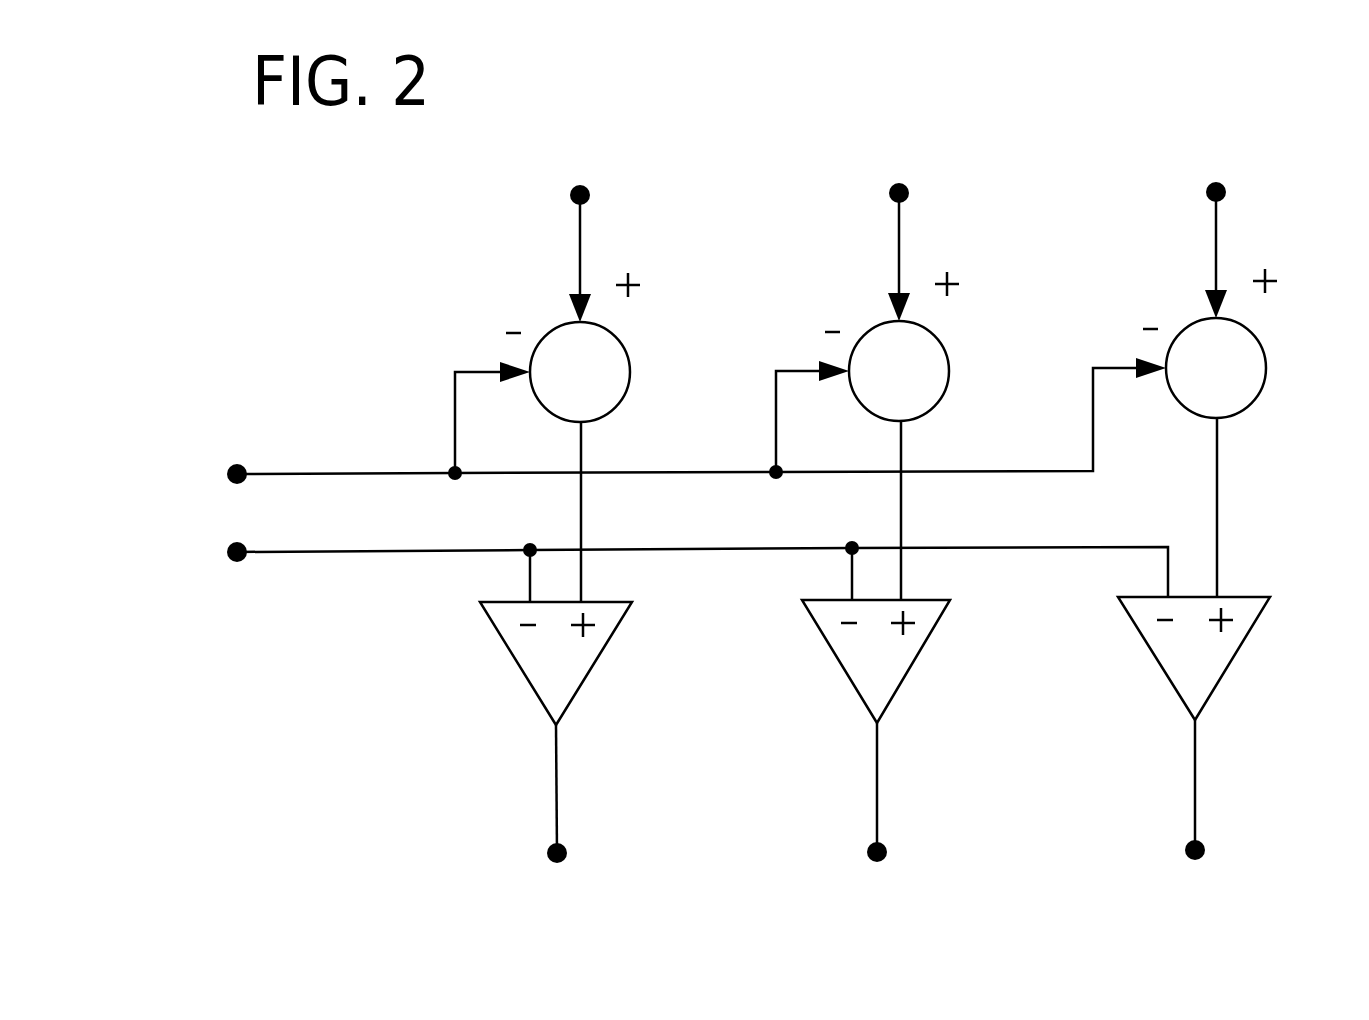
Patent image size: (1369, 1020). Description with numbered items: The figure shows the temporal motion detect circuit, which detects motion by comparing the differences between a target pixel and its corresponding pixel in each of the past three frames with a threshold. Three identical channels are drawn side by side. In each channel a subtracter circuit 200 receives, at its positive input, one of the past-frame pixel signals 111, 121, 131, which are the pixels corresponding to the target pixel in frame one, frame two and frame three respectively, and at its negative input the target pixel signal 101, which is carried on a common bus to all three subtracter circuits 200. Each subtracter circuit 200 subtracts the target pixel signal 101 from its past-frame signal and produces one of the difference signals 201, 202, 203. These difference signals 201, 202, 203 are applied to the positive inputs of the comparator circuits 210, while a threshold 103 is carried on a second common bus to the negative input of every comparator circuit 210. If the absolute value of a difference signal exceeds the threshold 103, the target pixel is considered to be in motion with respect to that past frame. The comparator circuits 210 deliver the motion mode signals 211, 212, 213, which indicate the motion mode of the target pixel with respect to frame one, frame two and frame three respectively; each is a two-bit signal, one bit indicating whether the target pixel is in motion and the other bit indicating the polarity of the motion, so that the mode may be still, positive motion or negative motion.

The target pixel signal 101 is at (639, 426).
The threshold 103 is at (655, 559).
The frame1 pixel signal 111 is at (620, 226).
The frame2 pixel signal 121 is at (939, 225).
The frame3 pixel signal 131 is at (1256, 223).
The subtracter circuit 200 is at (916, 350).
The difference signal 201 is at (625, 512).
The difference signal 202 is at (945, 510).
The difference signal 203 is at (1261, 507).
The comparator circuit 210 is at (893, 661).
The motion mode signal 211 is at (596, 794).
The motion mode signal 212 is at (916, 792).
The motion mode signal 213 is at (1234, 790).